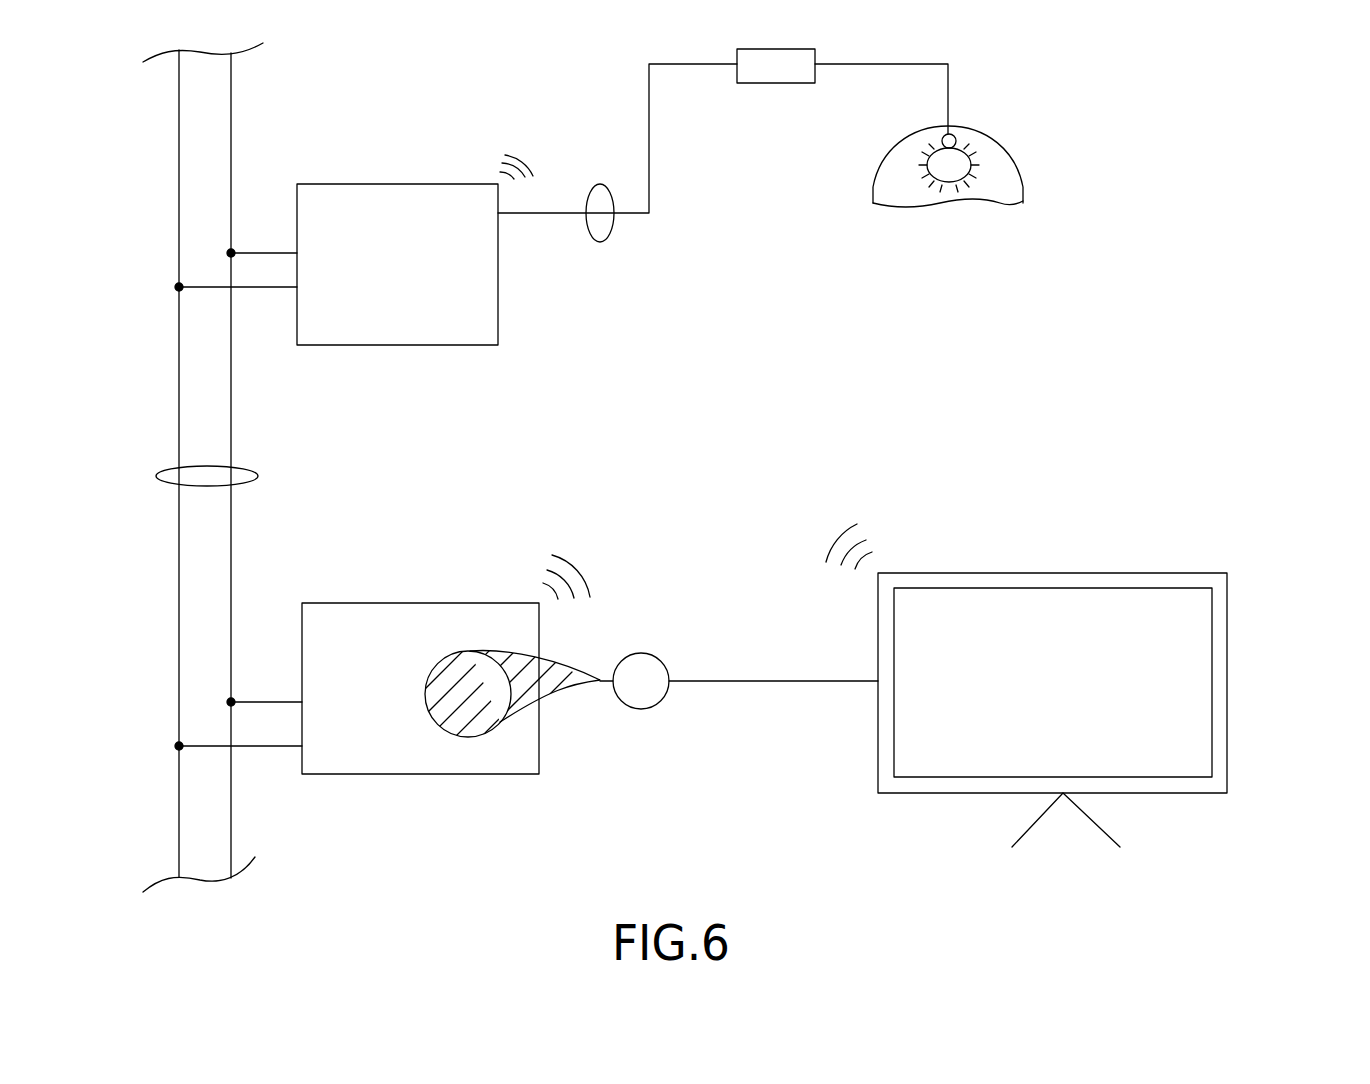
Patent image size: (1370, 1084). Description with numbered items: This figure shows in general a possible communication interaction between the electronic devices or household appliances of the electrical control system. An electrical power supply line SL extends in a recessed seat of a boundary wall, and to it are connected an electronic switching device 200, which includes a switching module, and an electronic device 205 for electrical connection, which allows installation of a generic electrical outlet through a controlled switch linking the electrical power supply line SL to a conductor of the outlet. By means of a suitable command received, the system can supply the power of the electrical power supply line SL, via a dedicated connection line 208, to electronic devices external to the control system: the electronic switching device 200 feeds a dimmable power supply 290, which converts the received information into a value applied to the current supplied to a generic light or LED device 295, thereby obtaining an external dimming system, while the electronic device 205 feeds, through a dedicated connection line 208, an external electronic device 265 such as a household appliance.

The electronic switching device 200 is at (396, 350).
The electronic device for electrical connection 205 is at (420, 785).
The dedicated connection line 208 is at (600, 243).
The dimmable power supply 290 is at (782, 92).
The LED device 295 is at (975, 155).
The electronic device 265 is at (1232, 666).
The electrical power supply line SL is at (222, 467).